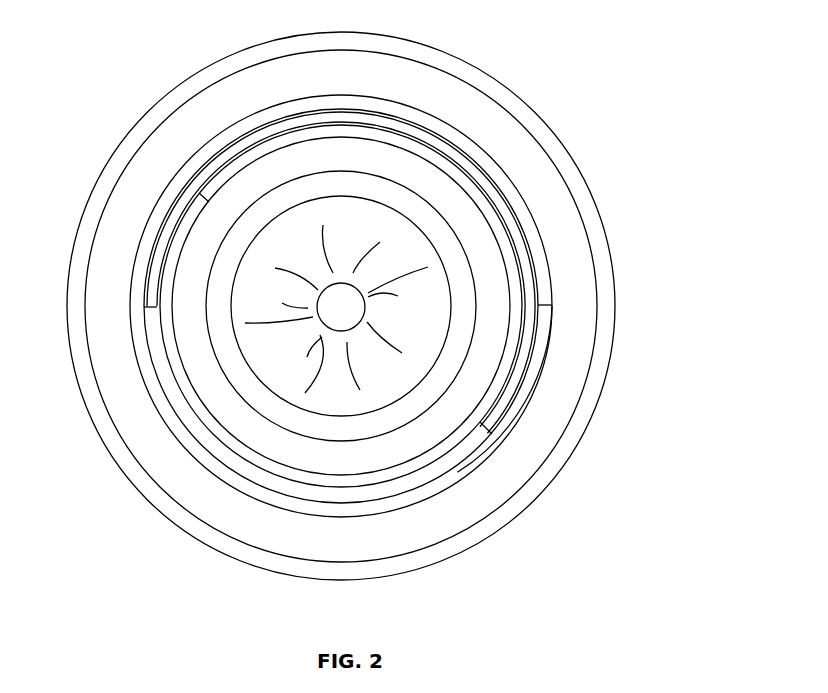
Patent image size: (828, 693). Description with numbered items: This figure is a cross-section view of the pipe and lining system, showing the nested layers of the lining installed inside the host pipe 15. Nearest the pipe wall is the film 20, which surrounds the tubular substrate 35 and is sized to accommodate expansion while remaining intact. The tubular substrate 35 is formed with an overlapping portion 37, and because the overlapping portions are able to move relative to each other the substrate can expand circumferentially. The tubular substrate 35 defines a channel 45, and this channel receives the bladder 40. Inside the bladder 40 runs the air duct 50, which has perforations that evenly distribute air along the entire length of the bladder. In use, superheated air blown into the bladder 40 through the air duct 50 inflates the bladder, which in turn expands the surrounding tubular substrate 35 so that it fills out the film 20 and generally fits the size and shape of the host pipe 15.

The pipe 15 is at (500, 92).
The film 20 is at (560, 205).
The tubular substrate 35 is at (535, 366).
The overlapping portion 37 is at (362, 512).
The bladder 40 is at (405, 395).
The channel 45 is at (332, 388).
The air duct 50 is at (342, 306).